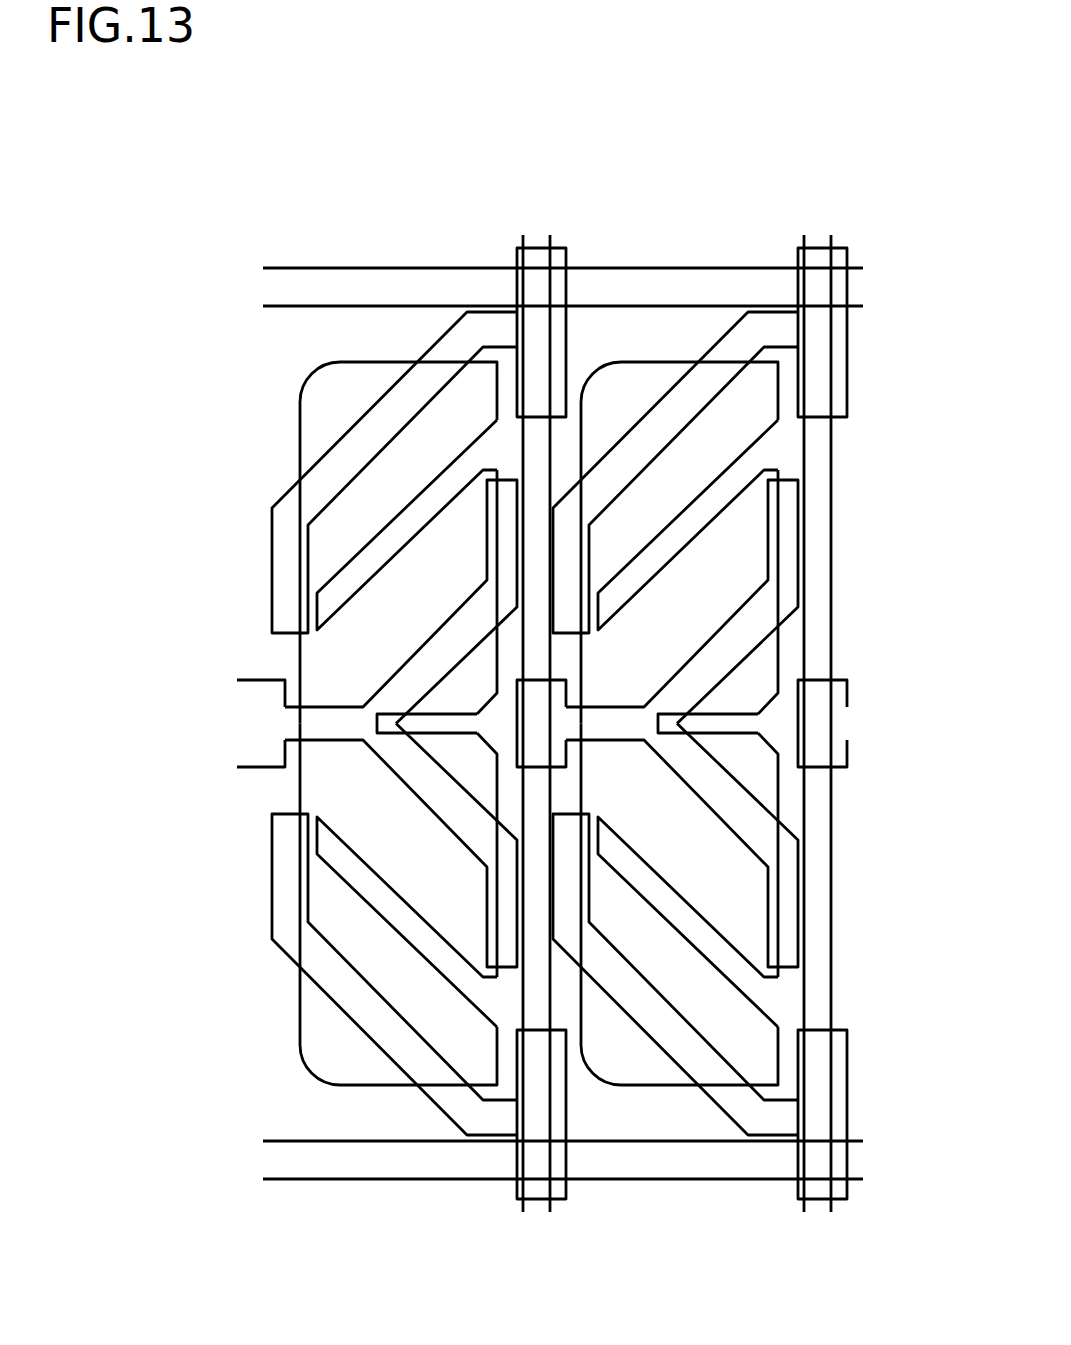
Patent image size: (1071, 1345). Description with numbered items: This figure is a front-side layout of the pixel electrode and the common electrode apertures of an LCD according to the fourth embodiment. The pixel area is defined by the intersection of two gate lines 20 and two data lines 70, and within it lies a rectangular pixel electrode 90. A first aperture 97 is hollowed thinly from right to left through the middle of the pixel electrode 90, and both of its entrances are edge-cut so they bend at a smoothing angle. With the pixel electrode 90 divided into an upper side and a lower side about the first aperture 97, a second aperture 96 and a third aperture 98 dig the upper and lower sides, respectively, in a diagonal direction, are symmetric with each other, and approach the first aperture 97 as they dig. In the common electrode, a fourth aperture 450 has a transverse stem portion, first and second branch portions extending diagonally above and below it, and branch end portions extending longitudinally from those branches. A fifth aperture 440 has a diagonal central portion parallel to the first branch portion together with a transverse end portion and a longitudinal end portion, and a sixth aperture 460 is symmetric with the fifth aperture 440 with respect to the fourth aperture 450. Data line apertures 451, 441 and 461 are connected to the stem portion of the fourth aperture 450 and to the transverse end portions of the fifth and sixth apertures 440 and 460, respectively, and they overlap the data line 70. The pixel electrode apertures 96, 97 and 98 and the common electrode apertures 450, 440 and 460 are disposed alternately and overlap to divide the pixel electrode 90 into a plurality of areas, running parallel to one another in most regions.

The gate line 20 is at (688, 1176).
The data line 70 is at (551, 430).
The pixel electrode 90 is at (298, 435).
The second aperture 96 is at (393, 511).
The first aperture 97 is at (457, 708).
The third aperture 98 is at (402, 893).
The fifth aperture 440 is at (271, 532).
The data line aperture 441 is at (567, 258).
The fourth aperture 450 is at (322, 707).
The data line aperture 451 is at (567, 692).
The sixth aperture 460 is at (271, 896).
The data line aperture 461 is at (567, 1190).